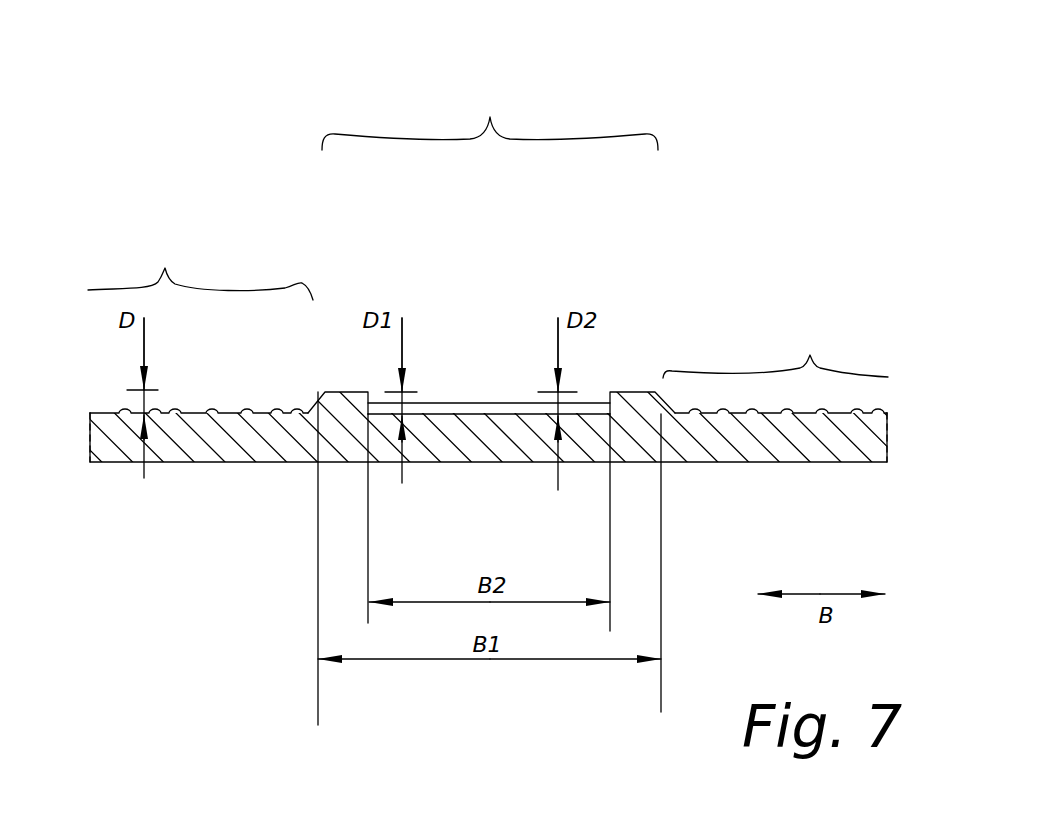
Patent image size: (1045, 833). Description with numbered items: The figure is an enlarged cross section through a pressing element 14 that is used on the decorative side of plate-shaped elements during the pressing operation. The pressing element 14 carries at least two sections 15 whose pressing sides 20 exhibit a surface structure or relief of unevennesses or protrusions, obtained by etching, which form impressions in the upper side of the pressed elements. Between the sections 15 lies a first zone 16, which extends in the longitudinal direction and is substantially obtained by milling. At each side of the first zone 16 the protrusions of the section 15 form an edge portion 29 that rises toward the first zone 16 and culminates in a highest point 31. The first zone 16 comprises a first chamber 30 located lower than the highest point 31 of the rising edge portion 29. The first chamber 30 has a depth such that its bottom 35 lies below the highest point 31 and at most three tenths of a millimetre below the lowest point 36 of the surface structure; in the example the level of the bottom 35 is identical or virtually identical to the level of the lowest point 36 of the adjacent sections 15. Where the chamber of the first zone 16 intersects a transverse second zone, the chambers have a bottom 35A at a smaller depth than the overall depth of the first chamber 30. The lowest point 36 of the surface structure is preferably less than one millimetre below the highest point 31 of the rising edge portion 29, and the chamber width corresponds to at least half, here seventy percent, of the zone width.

The pressing element 14 is at (797, 462).
The section 15 is at (165, 268).
The first zone 16 is at (490, 117).
The pressing side 20 is at (720, 277).
The edge portion 29 is at (310, 400).
The first chamber 30 is at (497, 397).
The highest point 31 is at (325, 392).
The bottom 35 is at (508, 416).
The bottom 35A is at (458, 403).
The lowest point 36 is at (103, 400).